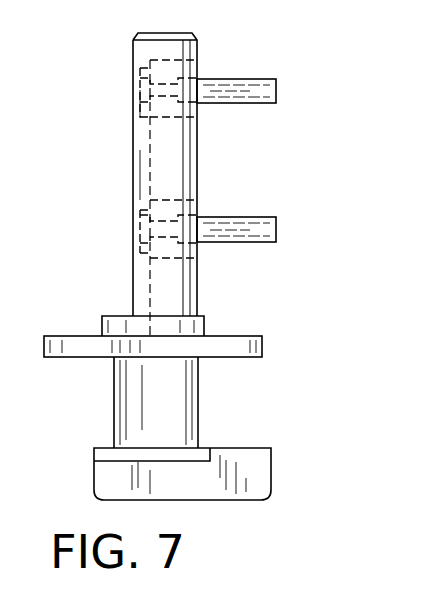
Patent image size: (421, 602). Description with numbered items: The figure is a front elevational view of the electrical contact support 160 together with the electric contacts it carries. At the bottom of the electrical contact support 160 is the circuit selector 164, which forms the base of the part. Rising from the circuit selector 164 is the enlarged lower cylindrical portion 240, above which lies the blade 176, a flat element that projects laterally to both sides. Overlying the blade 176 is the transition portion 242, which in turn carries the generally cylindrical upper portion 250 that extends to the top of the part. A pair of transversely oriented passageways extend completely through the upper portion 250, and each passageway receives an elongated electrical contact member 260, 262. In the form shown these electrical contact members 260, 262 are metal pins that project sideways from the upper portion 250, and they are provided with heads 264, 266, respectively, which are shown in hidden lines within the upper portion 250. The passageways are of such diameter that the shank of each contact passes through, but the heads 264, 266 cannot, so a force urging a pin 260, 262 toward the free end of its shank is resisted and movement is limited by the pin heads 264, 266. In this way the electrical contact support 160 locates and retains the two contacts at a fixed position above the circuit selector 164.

The electrical contact support 160 is at (133, 160).
The circuit selector 164 is at (271, 477).
The blade 176 is at (255, 336).
The enlarged lower cylindrical portion 240 is at (199, 413).
The transition portion 242 is at (207, 322).
The upper portion 250 is at (197, 152).
The electrical contact member 260 is at (241, 79).
The electrical contact member 262 is at (258, 217).
The pin head 264 is at (133, 93).
The pin head 266 is at (133, 228).